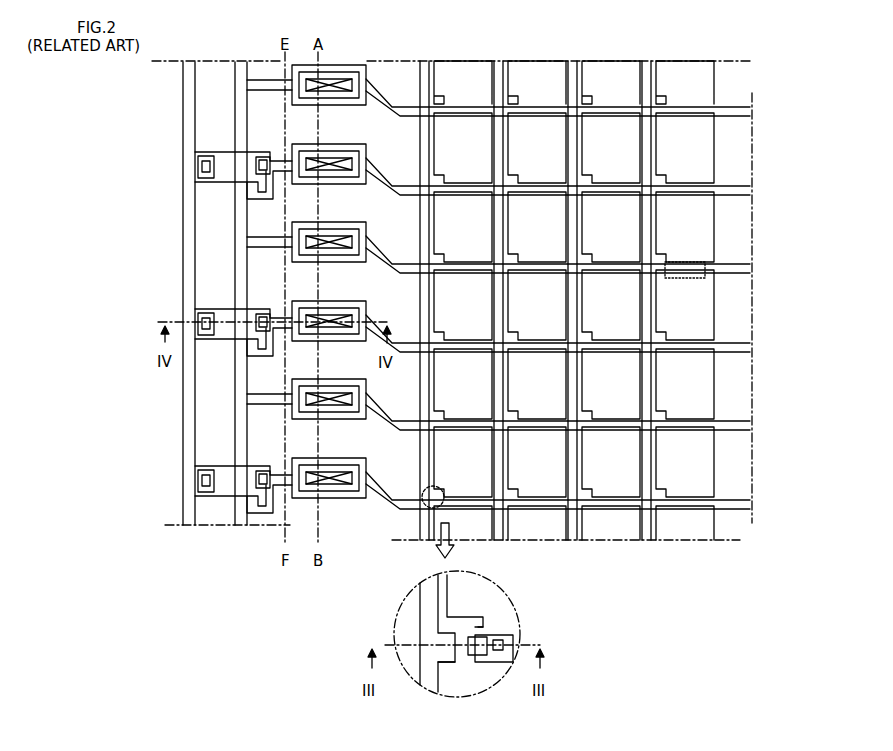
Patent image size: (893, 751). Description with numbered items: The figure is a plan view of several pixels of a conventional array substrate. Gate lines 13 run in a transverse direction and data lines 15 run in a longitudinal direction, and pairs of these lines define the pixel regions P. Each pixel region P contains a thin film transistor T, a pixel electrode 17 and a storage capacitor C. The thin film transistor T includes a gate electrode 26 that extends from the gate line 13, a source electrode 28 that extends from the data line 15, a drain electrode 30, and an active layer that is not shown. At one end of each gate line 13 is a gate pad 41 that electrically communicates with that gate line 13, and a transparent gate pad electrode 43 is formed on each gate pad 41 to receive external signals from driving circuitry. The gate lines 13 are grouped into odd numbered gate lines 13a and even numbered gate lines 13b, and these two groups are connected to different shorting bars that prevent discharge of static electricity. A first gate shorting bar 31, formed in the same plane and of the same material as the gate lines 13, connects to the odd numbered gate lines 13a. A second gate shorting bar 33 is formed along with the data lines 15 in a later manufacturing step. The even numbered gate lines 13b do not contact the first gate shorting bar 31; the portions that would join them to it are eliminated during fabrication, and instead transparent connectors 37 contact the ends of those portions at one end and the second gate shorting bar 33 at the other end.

The gate lines 13 is at (590, 366).
The odd numbered gate lines 13a is at (745, 112).
The even numbered gate lines 13b is at (748, 190).
The data lines 15 is at (653, 518).
The pixel electrode 17 is at (715, 165).
The gate electrode 26 is at (515, 640).
The source electrode 28 is at (450, 668).
The drain electrode 30 is at (505, 662).
The first gate shorting bar 31 is at (232, 104).
The second gate shorting bar 33 is at (183, 138).
The transparent connectors 37 is at (198, 188).
The gate pad 41 is at (335, 67).
The gate pad electrode 43 is at (367, 77).
The pixel region P is at (742, 148).
The storage capacitor C is at (700, 288).
The thin film transistor T is at (426, 504).